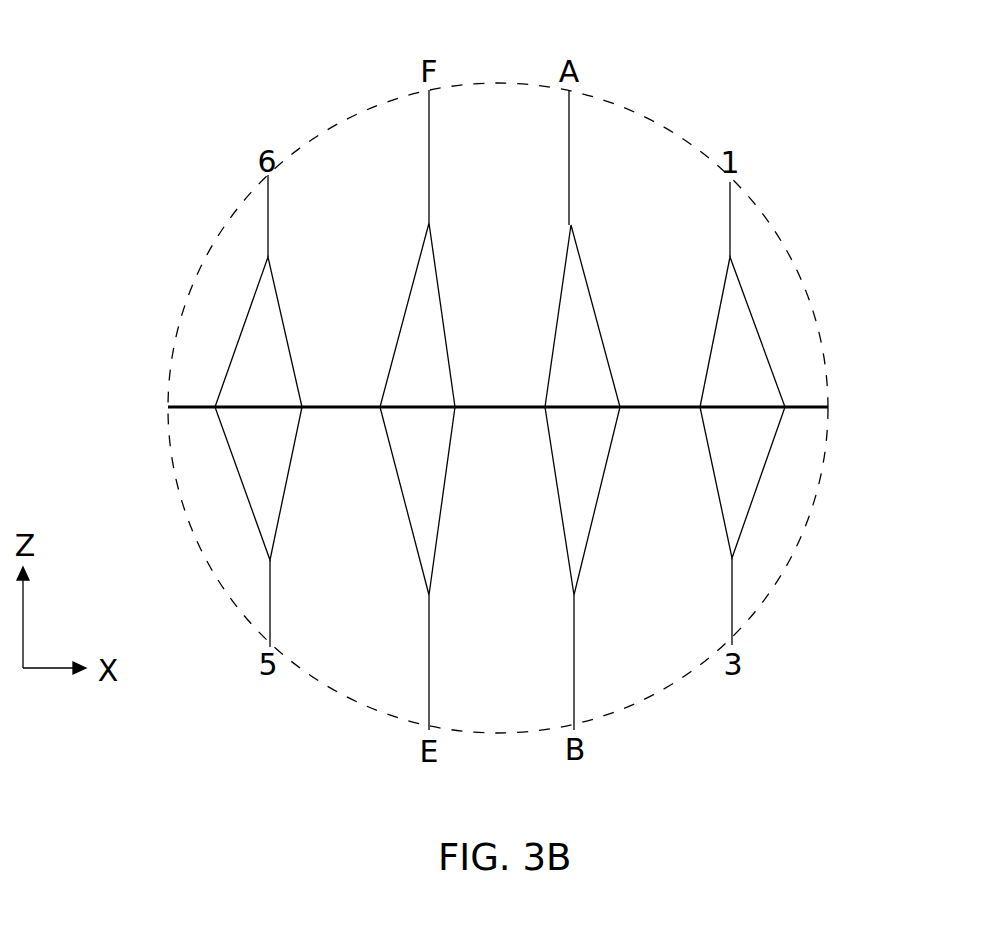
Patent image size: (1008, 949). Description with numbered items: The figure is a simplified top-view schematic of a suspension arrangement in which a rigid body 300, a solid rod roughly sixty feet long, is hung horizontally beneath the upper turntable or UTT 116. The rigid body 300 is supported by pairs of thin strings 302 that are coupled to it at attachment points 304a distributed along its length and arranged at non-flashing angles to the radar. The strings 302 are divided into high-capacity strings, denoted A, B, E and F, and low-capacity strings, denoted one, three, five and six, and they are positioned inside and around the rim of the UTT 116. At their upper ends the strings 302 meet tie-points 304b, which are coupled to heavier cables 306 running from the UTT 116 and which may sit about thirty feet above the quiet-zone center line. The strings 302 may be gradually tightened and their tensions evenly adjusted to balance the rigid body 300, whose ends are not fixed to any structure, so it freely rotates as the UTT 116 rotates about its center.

The upper turntable 116 is at (213, 573).
The rigid body 300 is at (168, 407).
The strings 302 is at (420, 255).
The attachment points 304a is at (700, 405).
The tie-points 304b is at (268, 257).
The cables 306 is at (429, 657).